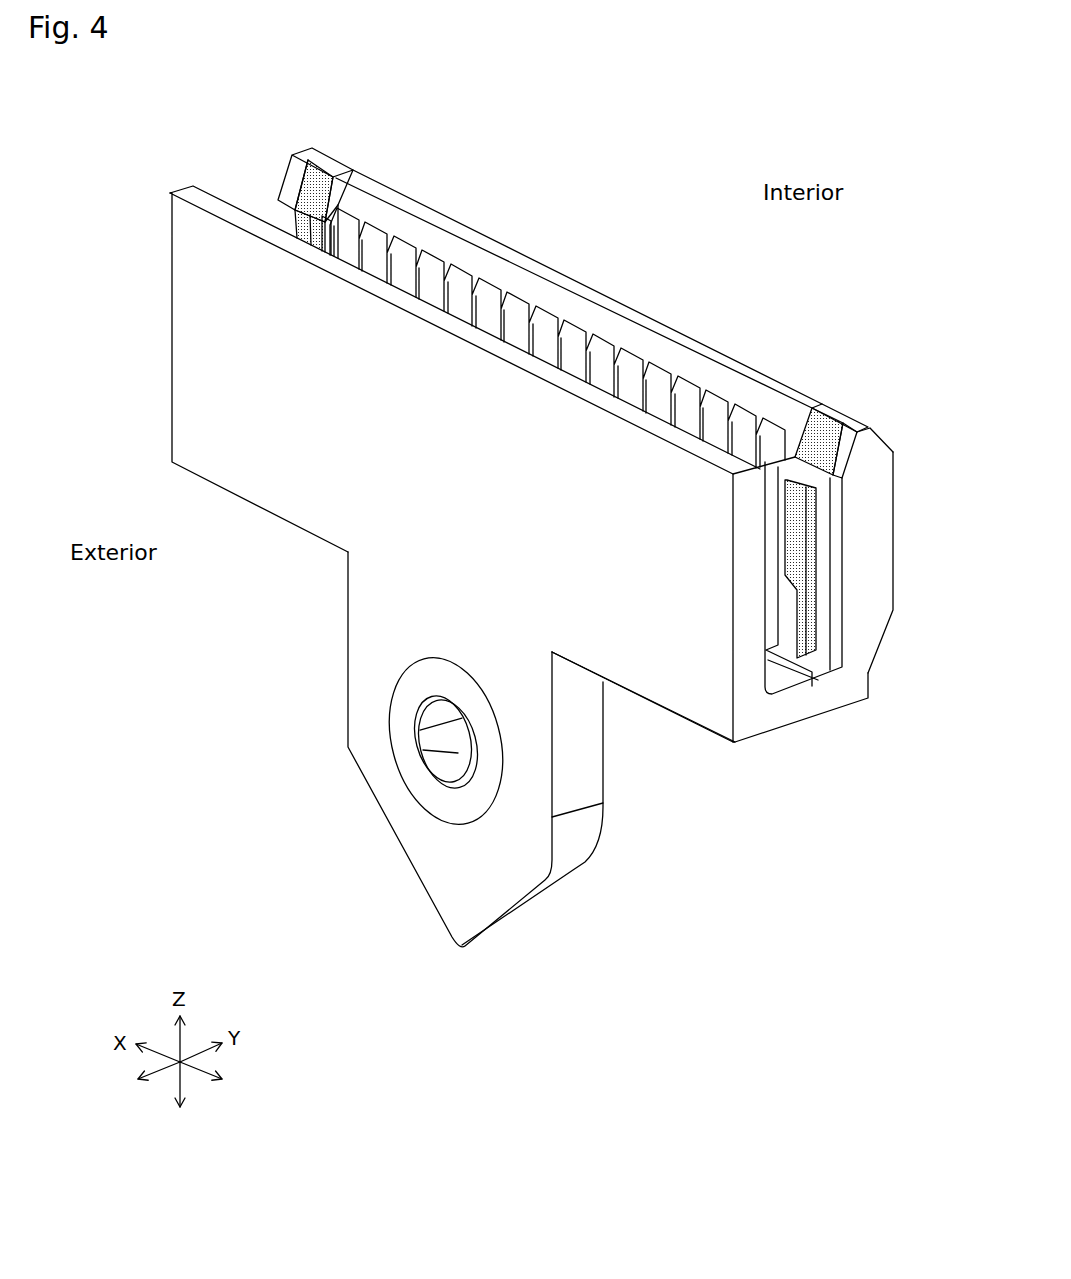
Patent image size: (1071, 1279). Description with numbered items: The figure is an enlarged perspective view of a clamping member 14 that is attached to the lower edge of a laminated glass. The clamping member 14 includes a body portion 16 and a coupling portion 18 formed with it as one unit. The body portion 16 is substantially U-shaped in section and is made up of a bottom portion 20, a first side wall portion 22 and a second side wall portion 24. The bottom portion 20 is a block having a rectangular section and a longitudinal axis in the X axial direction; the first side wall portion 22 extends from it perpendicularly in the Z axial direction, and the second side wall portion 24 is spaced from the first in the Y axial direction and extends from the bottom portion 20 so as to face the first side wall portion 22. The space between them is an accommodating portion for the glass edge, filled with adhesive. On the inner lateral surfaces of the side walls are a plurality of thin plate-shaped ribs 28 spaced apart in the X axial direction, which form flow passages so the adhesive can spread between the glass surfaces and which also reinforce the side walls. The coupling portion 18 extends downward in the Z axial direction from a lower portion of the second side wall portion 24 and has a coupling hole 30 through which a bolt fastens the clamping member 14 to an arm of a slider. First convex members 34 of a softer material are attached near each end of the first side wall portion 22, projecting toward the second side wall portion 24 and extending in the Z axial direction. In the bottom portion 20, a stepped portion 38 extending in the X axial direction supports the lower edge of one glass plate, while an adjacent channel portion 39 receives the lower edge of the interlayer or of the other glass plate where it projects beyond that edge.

The clamping member 14 is at (639, 216).
The body portion 16 is at (889, 433).
The coupling portion 18 is at (372, 836).
The bottom portion 20 is at (808, 700).
The first side wall portion 22 is at (872, 540).
The second side wall portion 24 is at (672, 684).
The ribs 28 is at (470, 300).
The coupling hole 30 is at (457, 753).
The first convex members 34 is at (347, 152).
The stepped portion 38 is at (833, 648).
The channel portion 39 is at (823, 673).